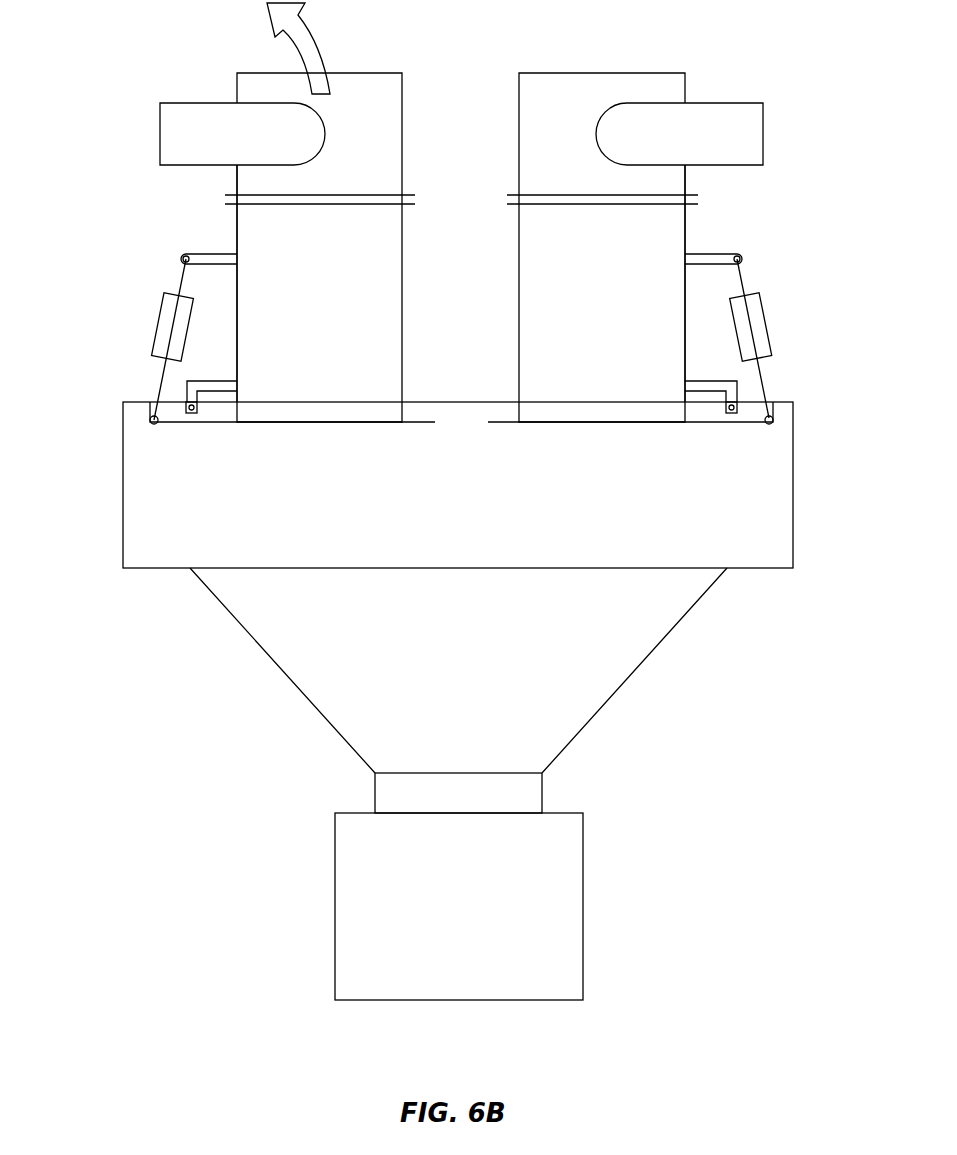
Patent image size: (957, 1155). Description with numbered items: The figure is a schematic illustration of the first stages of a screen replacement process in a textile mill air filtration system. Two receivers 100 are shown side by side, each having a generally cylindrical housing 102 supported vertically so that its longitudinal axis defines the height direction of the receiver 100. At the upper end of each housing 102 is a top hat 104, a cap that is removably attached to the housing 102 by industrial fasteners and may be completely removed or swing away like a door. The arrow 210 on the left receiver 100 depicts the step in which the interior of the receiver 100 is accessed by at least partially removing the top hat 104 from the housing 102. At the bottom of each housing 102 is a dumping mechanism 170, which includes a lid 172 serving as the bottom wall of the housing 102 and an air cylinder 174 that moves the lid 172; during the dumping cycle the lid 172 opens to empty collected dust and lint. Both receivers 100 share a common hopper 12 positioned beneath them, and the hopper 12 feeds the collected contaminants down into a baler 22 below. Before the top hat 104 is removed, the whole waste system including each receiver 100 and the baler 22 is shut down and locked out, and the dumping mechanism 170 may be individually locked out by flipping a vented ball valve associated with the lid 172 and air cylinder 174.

The hopper 12 is at (568, 698).
The baler 22 is at (560, 888).
The receiver 100 is at (270, 234).
The housing 102 is at (237, 242).
The top hat 104 is at (262, 83).
The dumping mechanism 170 is at (277, 423).
The lid 172 is at (312, 412).
The air cylinder 174 is at (168, 322).
The arrow 210 is at (307, 43).